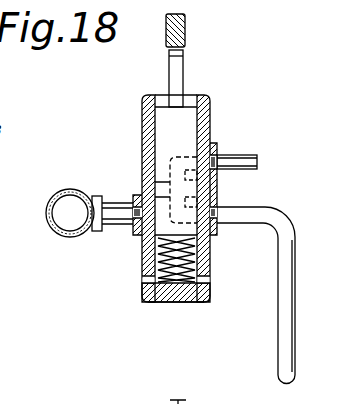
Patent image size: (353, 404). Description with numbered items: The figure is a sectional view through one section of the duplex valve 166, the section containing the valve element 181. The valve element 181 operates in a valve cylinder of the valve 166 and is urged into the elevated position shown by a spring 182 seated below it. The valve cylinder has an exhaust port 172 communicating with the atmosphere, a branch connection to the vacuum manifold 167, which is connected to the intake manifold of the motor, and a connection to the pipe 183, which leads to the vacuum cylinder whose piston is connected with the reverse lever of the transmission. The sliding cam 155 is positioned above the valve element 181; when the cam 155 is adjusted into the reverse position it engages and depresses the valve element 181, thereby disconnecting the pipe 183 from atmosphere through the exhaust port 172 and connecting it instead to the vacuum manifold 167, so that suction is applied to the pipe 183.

The sliding cam 155 is at (186, 24).
The valve element 181 is at (170, 121).
The exhaust port 172 is at (238, 158).
The vacuum manifold 167 is at (73, 190).
The spring 182 is at (143, 254).
The valve 166 is at (146, 301).
The pipe 183 is at (280, 279).